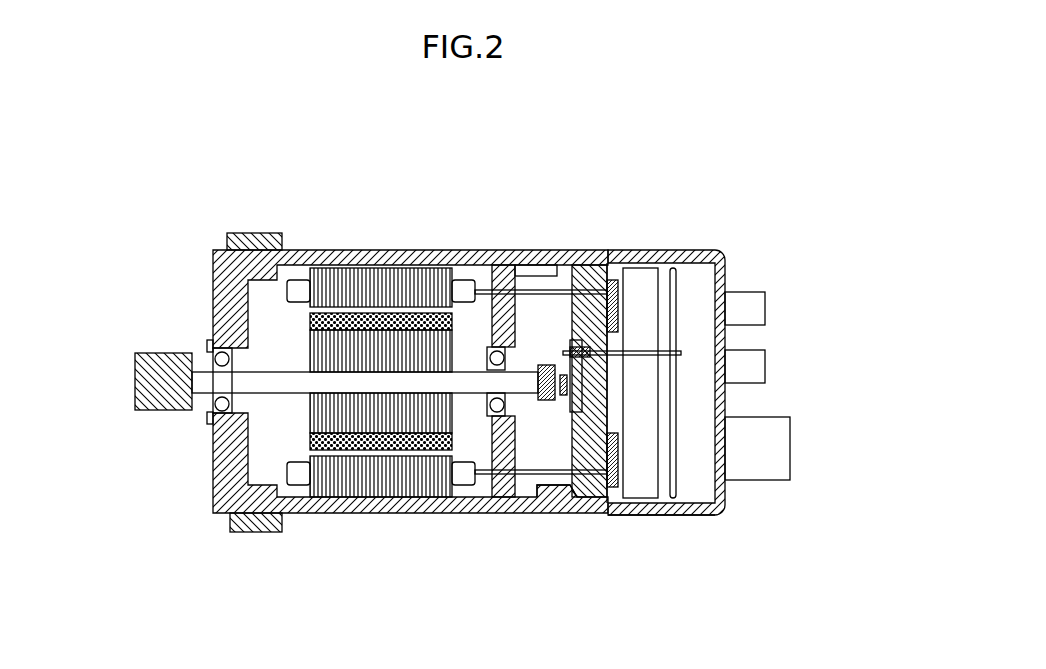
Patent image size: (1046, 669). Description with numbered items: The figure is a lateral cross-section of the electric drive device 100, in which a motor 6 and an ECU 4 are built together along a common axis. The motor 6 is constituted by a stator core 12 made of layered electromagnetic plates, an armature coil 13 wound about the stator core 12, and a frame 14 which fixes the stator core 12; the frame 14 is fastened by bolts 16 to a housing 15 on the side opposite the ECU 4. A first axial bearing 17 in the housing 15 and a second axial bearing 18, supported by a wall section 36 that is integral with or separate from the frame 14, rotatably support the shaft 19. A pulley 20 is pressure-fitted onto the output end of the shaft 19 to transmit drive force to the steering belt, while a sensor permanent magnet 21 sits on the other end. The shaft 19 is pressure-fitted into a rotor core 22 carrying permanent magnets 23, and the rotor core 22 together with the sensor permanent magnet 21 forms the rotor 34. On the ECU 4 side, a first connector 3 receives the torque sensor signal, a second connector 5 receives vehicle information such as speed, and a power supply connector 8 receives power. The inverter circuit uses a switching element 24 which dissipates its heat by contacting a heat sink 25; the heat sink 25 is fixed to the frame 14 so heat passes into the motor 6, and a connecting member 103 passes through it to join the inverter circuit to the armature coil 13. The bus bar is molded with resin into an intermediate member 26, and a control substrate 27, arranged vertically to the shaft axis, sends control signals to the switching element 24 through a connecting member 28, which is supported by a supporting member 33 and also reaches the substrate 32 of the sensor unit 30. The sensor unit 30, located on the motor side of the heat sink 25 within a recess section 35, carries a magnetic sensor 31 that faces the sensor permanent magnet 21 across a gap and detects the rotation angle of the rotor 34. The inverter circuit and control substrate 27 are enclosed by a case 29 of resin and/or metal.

The electric drive device 100 is at (445, 185).
The ECU 4 is at (716, 245).
The first connector 3 is at (765, 308).
The second connector 5 is at (765, 367).
The power supply connector 8 is at (790, 440).
The motor 6 is at (331, 275).
The stator core 12 is at (346, 500).
The armature coil 13 is at (297, 288).
The frame 14 is at (357, 262).
The housing 15 is at (200, 254).
The bolts 16 is at (228, 532).
The first axial bearing 17 is at (215, 357).
The second axial bearing 18 is at (484, 330).
The shaft 19 is at (215, 395).
The pulley 20 is at (135, 375).
The sensor permanent magnet 21 is at (515, 267).
The rotor core 22 is at (307, 418).
The permanent magnets 23 is at (307, 445).
The switching element 24 is at (612, 513).
The heat sink 25 is at (559, 513).
The intermediate member 26 is at (643, 478).
The control substrate 27 is at (680, 478).
The connecting member 28 is at (641, 348).
The case 29 is at (722, 510).
The sensor unit 30 is at (545, 363).
The magnetic sensor 31 is at (560, 350).
The substrate 32 is at (577, 346).
The supporting member 33 is at (608, 280).
The rotor 34 is at (310, 337).
The recess section 35 is at (563, 398).
The wall section 36 is at (575, 405).
The connecting member 103 is at (577, 513).